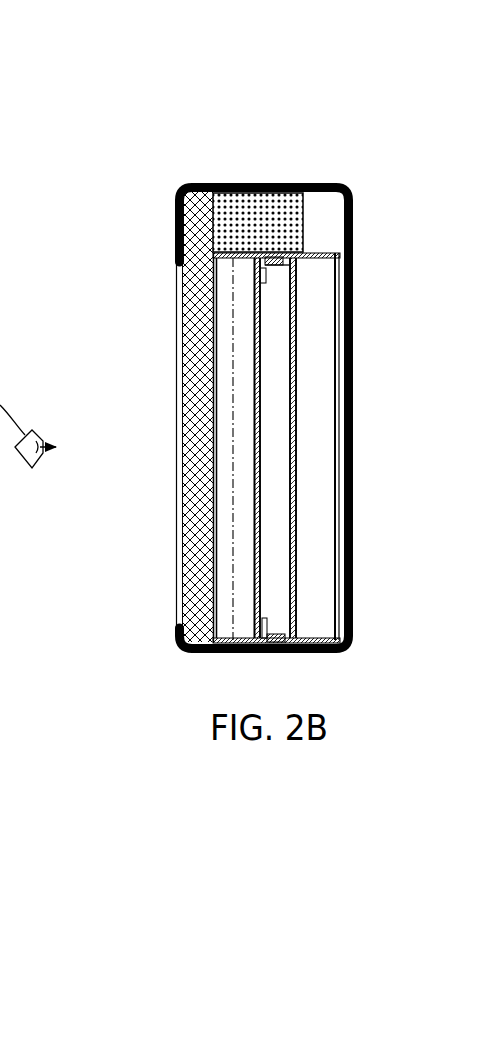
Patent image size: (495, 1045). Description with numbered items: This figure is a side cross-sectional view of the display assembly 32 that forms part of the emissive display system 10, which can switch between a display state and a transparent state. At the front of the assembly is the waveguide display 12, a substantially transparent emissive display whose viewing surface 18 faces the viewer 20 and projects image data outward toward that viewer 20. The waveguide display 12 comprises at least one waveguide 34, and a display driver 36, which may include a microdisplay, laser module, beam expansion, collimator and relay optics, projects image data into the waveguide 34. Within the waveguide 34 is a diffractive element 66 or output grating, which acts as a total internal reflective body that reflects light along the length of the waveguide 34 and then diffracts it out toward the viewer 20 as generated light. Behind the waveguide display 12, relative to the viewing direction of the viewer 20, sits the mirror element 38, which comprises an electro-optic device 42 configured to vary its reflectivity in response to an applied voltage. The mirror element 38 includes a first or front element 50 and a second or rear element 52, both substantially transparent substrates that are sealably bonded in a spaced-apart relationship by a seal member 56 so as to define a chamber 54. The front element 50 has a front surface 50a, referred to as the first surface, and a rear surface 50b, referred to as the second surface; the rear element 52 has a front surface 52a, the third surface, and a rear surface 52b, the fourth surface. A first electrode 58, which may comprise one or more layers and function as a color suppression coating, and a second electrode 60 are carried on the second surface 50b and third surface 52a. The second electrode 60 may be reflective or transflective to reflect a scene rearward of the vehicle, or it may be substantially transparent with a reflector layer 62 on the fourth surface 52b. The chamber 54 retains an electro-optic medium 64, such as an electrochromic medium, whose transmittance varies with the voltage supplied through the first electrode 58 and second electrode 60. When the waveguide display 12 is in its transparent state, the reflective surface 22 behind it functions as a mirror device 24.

The emissive display system 10 is at (206, 139).
The waveguide display 12 is at (160, 242).
The viewing surface 18 is at (182, 299).
The viewer 20 is at (53, 454).
The reflective surface 22 is at (287, 382).
The mirror device 24 is at (243, 426).
The display assembly 32 is at (192, 185).
The waveguide 34 is at (220, 442).
The display driver 36 is at (270, 212).
The mirror element 38 is at (287, 382).
The electro-optic device 42 is at (325, 230).
The first element 50 is at (243, 303).
The front surface of the front element 50a is at (227, 323).
The rear surface of the front element 50b is at (257, 343).
The second element 52 is at (308, 348).
The front surface of the rear element 52a is at (295, 365).
The rear surface of the rear element 52b is at (332, 398).
The chamber 54 is at (277, 417).
The seal member 56 is at (280, 268).
The first electrode 58 is at (262, 450).
The second electrode 60 is at (293, 483).
The reflector layer 62 is at (335, 527).
The electro-optic medium 64 is at (272, 550).
The diffractive element 66 is at (233, 549).